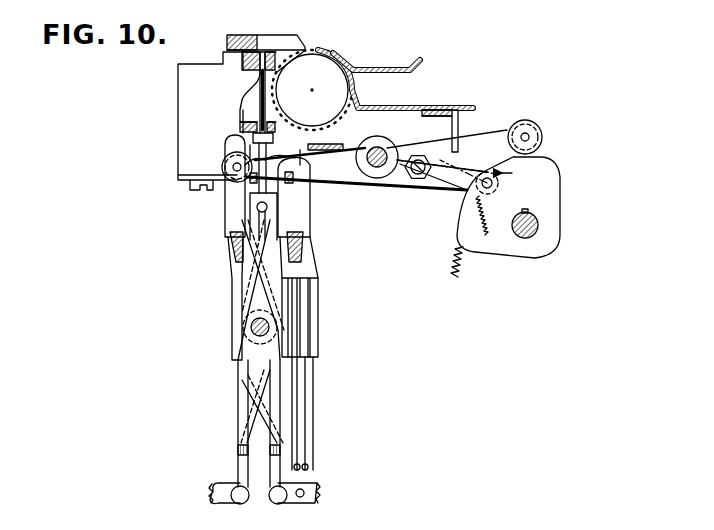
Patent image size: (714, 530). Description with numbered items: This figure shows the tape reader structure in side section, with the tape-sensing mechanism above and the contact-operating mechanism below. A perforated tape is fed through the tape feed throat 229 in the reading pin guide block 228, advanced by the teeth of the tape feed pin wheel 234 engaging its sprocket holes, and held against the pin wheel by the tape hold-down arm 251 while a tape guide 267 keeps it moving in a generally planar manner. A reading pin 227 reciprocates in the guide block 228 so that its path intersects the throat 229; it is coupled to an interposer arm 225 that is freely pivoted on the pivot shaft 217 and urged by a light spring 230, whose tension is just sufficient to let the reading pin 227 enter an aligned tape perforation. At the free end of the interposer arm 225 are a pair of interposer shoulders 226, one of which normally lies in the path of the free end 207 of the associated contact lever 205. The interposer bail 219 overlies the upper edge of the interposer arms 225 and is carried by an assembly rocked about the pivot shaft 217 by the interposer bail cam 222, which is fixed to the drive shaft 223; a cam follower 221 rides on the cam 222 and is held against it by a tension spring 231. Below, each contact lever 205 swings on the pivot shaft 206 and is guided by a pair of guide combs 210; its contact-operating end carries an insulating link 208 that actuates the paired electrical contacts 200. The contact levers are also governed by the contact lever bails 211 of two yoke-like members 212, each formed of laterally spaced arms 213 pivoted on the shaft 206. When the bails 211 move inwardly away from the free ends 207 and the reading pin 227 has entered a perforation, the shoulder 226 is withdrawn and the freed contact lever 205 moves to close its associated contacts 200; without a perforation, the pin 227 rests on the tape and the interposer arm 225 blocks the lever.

The paired electrical contacts 200 is at (307, 481).
The contact lever 205 is at (260, 497).
The pivot shaft 206 is at (253, 327).
The free end 207 is at (232, 245).
The insulating link 208 is at (220, 500).
The guide combs 210 is at (270, 413).
The contact lever bail 211 is at (275, 197).
The yoke-like members 212 is at (316, 205).
The arms 213 is at (228, 200).
The pivot shaft 217 is at (383, 170).
The interposer bail 219 is at (322, 145).
The cam follower 221 is at (537, 122).
The interposer bail cam 222 is at (550, 180).
The drive shaft 223 is at (533, 238).
The interposer arm 225 is at (353, 172).
The interposer shoulders 226 is at (245, 172).
The reading pin 227 is at (258, 105).
The reading pin guide block 228 is at (178, 112).
The tape feed throat 229 is at (233, 35).
The light spring 230 is at (430, 146).
The tension spring 231 is at (467, 260).
The tape feed pin wheel 234 is at (340, 97).
The tape hold-down arm 251 is at (397, 70).
The tape guide 267 is at (258, 36).